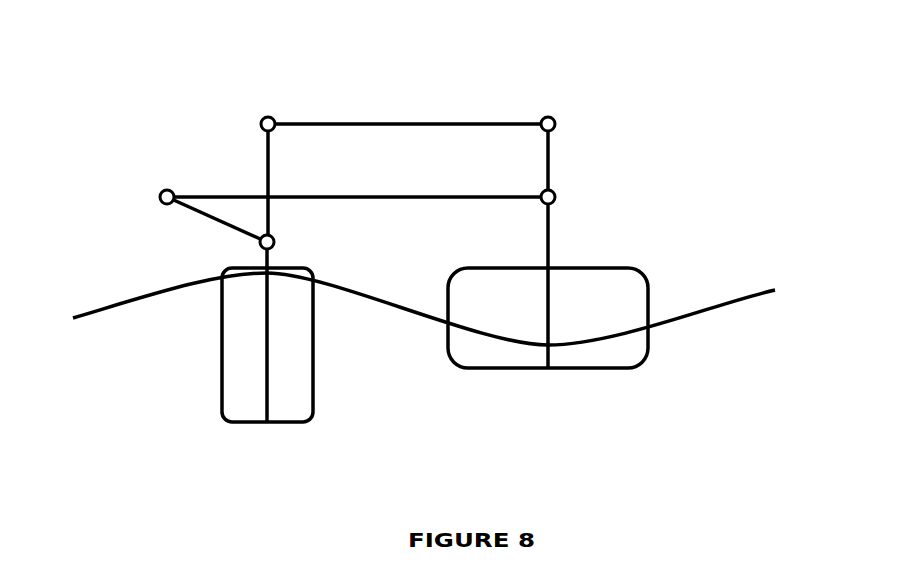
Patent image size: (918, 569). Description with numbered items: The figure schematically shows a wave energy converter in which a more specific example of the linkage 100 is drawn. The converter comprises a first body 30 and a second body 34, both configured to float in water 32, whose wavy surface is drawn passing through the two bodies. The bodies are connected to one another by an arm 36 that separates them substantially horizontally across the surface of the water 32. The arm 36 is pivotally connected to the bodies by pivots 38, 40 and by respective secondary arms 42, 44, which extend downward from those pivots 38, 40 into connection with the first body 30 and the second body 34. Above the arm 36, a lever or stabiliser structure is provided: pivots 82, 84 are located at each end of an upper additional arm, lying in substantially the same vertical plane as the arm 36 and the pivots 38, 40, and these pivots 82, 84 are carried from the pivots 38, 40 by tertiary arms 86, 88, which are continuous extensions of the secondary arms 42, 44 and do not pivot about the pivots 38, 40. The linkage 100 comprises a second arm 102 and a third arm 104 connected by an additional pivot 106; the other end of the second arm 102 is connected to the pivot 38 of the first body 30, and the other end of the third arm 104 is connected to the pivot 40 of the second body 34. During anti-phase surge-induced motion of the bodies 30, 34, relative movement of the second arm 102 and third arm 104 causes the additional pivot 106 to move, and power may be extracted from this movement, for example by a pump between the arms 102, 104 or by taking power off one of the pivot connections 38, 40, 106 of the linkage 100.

The first body 30 is at (232, 403).
The water 32 is at (728, 323).
The second body 34 is at (475, 358).
The arm 36 is at (412, 120).
The pivot 38 is at (278, 233).
The pivot 40 is at (562, 192).
The secondary arm 42 is at (275, 258).
The secondary arm 44 is at (553, 245).
The pivot 82 is at (278, 117).
The pivot 84 is at (550, 110).
The tertiary arm 86 is at (272, 170).
The tertiary arm 88 is at (543, 158).
The linkage 100 is at (120, 212).
The second arm 102 is at (210, 225).
The third arm 104 is at (213, 190).
The additional pivot 106 is at (160, 185).